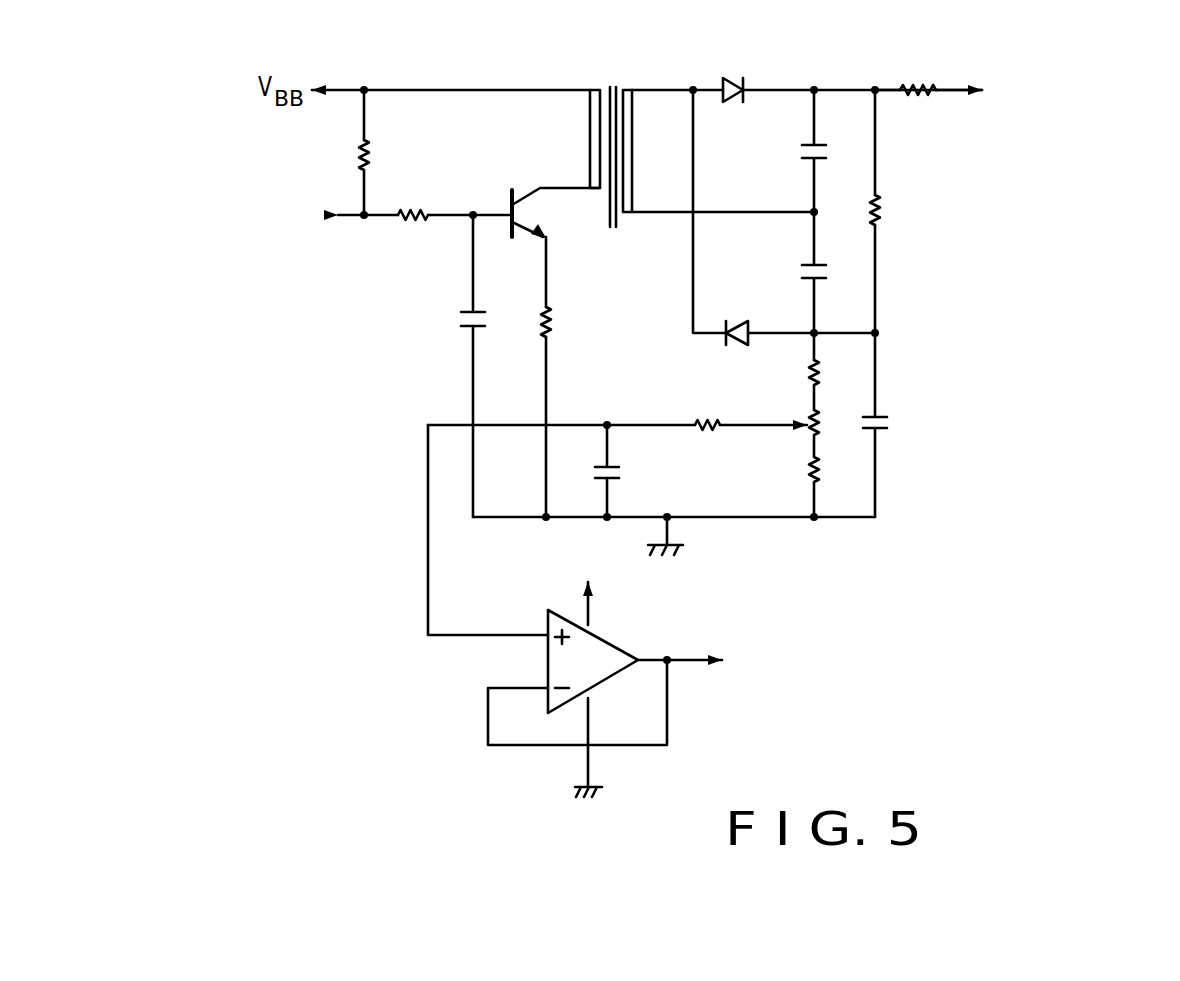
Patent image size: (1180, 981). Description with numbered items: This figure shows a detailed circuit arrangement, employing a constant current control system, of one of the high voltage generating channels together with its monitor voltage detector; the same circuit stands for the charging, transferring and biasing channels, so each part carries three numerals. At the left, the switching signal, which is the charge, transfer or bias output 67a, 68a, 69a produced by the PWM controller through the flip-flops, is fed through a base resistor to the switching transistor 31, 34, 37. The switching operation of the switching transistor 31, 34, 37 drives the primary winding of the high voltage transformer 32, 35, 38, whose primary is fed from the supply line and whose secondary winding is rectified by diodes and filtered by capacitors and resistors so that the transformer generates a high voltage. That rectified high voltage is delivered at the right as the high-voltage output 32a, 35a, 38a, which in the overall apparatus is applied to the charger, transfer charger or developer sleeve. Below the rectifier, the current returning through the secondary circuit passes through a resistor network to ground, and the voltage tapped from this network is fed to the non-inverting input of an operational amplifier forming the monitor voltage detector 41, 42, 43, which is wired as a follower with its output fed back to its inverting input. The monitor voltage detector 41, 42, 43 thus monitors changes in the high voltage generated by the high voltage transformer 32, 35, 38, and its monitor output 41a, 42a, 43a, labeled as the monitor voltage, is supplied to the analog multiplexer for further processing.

The switching transistor 31 is at (519, 190).
The switching transistor 34 is at (519, 190).
The switching transistor 37 is at (524, 193).
The high voltage transformer for charging 32 is at (683, 128).
The high voltage transformer for transferring 35 is at (683, 128).
The high voltage transformer for biasing 38 is at (613, 82).
The monitor voltage detector 41 is at (635, 670).
The monitor voltage detector 42 is at (635, 670).
The monitor voltage detector 43 is at (610, 637).
The high-voltage output 32a is at (1021, 117).
The high-voltage output 35a is at (1021, 117).
The high-voltage output 38a is at (1021, 117).
The monitor output 41a is at (801, 674).
The monitor output 42a is at (801, 674).
The monitor output 43a is at (801, 674).
The charge output 67a is at (339, 232).
The transfer output 68a is at (339, 232).
The bias output 69a is at (339, 232).